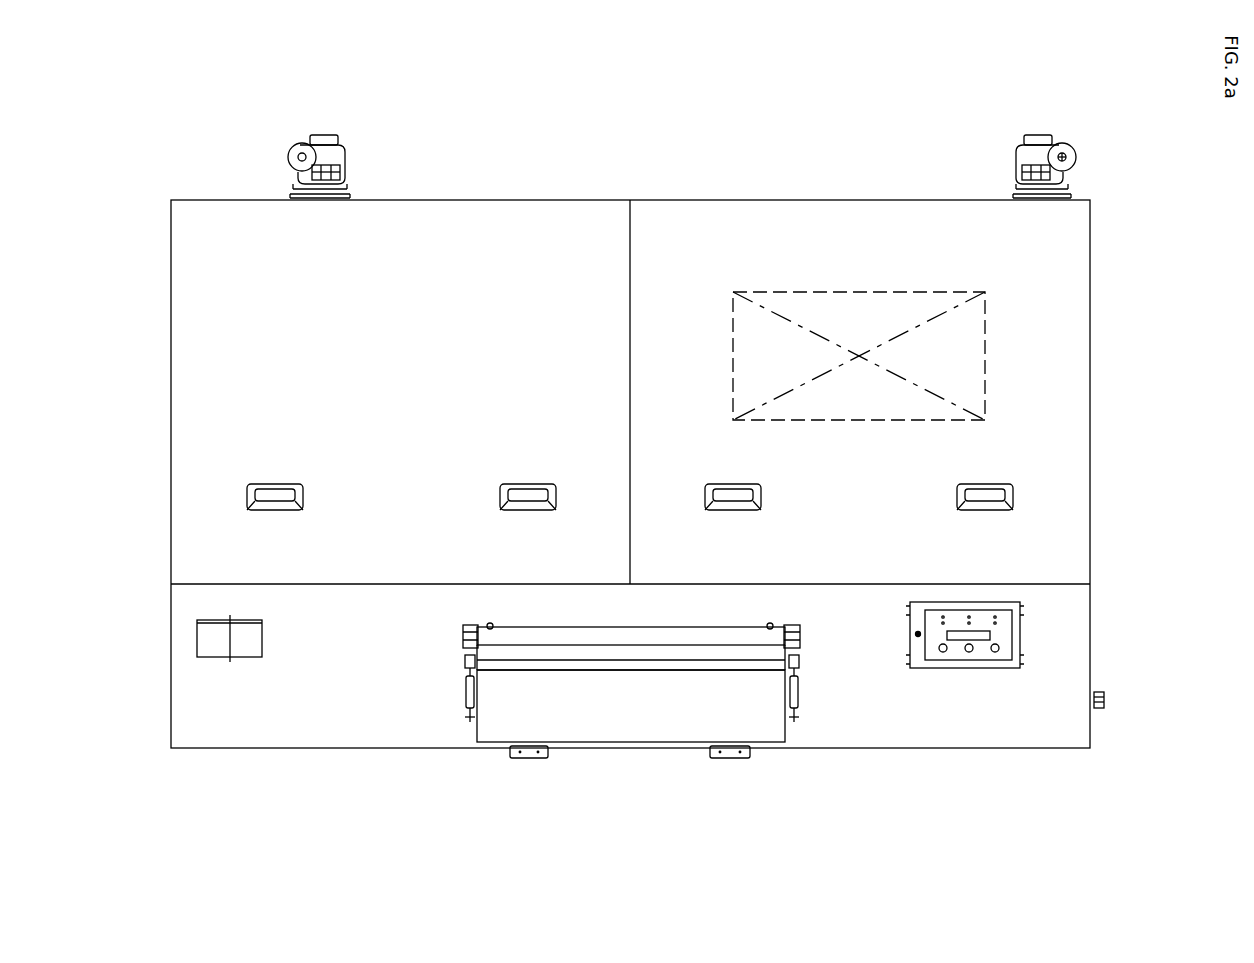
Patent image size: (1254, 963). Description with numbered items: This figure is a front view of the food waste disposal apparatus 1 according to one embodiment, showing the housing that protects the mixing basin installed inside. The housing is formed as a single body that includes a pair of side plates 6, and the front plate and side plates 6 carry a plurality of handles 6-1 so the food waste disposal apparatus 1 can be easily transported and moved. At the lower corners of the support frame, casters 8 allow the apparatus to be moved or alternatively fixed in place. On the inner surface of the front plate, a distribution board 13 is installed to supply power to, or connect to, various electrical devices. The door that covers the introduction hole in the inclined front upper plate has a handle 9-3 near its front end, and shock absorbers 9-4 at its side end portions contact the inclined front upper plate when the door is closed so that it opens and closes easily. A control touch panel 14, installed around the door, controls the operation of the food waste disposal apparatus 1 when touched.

The food waste disposal apparatus 1 is at (1108, 808).
The caster 8 is at (352, 138).
The distribution board 13 is at (972, 348).
The handle 6-1 is at (522, 495).
The side plate 6 is at (508, 730).
The handle 9-3 is at (508, 633).
The shock absorber 9-4 is at (468, 705).
The control touch panel 14 is at (988, 660).